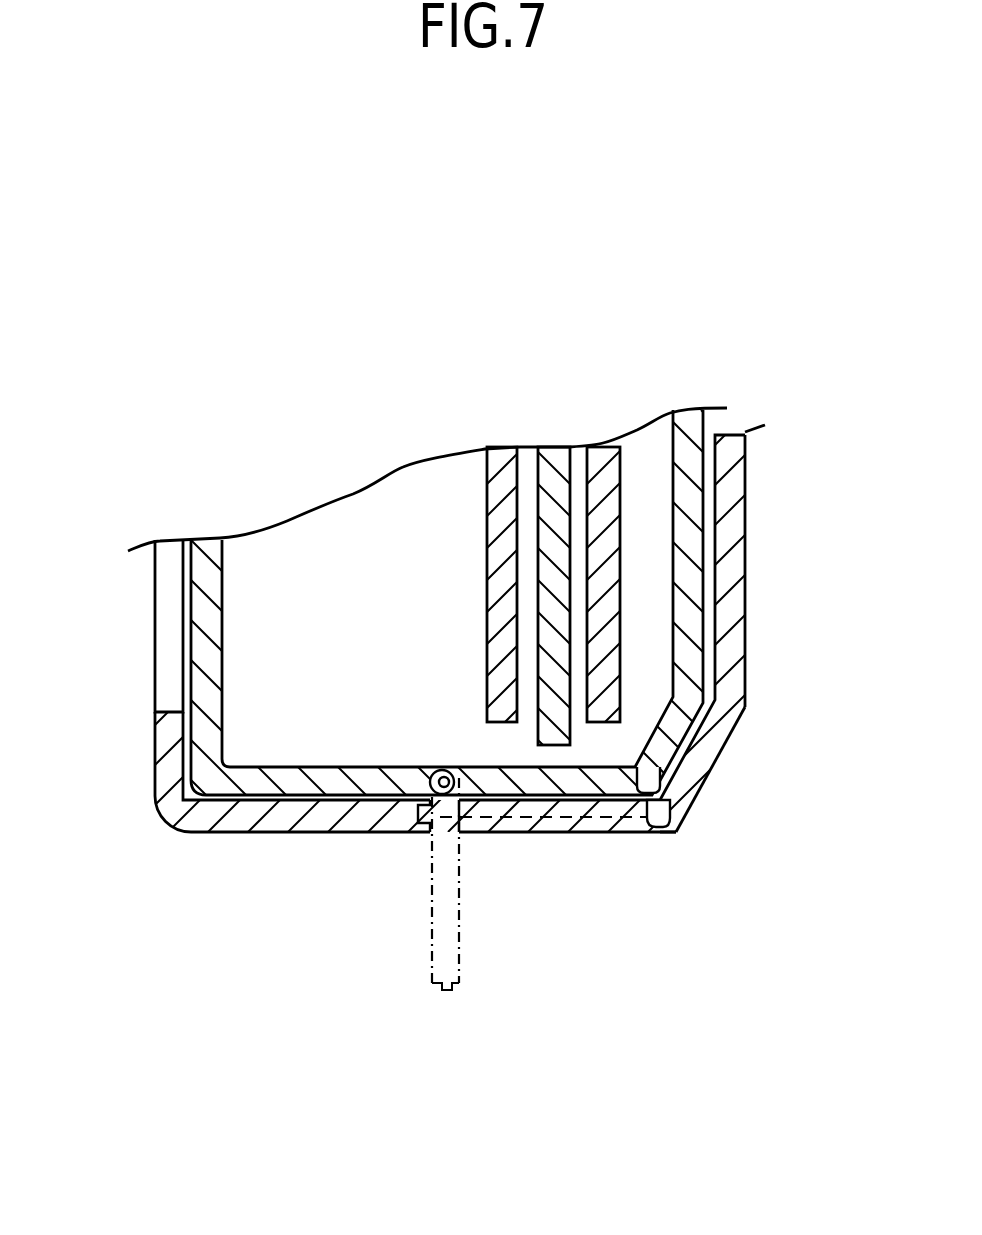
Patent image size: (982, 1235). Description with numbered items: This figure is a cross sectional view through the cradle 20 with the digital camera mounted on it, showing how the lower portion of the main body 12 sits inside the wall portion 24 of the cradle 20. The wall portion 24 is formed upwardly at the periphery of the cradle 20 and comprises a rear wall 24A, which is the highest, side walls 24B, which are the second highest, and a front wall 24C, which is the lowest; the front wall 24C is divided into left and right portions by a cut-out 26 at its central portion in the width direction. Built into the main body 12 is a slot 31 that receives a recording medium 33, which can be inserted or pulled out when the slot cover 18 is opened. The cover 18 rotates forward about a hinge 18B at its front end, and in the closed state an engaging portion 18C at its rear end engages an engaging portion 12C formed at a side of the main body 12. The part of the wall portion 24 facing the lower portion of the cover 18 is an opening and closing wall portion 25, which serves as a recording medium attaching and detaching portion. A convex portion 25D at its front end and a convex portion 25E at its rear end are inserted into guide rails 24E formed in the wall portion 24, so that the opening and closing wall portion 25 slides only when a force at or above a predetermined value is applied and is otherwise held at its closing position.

The main body 12 is at (718, 421).
The engaging portion 12C is at (657, 798).
The slot cover 18 is at (590, 763).
The hinge 18B is at (448, 768).
The engaging portion 18C is at (657, 768).
The cradle 20 is at (750, 555).
The wall portion 24 is at (745, 493).
The rear wall 24A is at (745, 605).
The side walls 24B is at (287, 833).
The front wall 24C is at (155, 773).
The guide rails 24E is at (462, 840).
The opening and closing wall portion 25 is at (573, 836).
The convex portion 25D is at (418, 812).
The convex portion 25E is at (687, 815).
The cut-out 26 is at (173, 710).
The slot 31 is at (495, 635).
The recording medium 33 is at (547, 567).